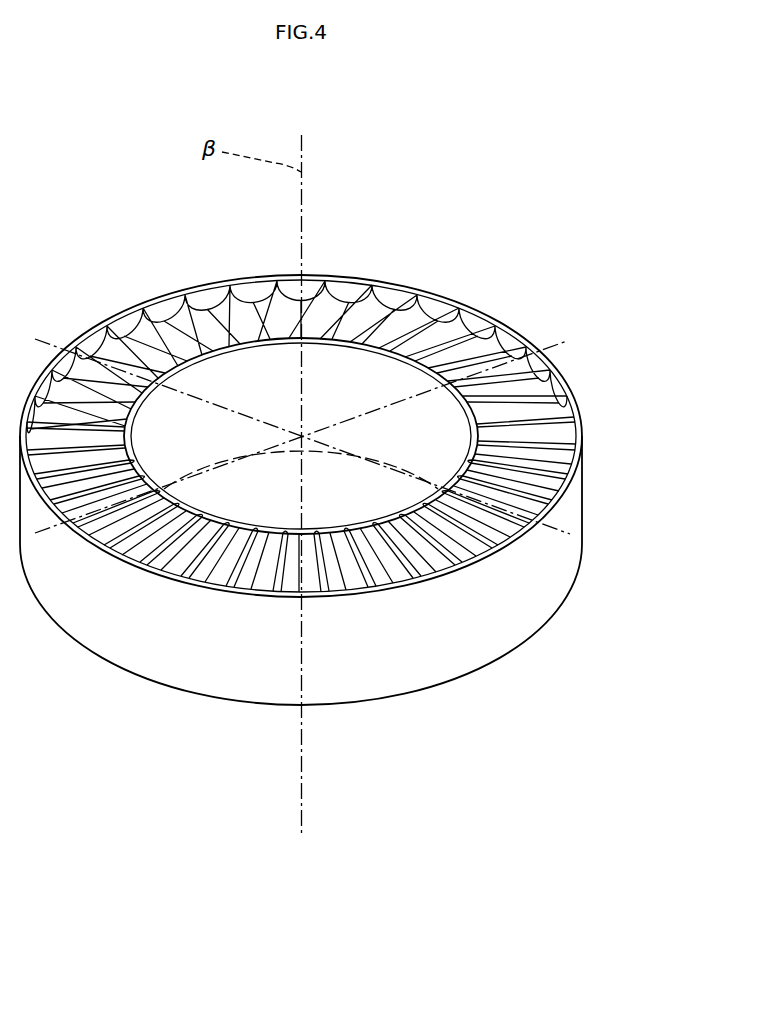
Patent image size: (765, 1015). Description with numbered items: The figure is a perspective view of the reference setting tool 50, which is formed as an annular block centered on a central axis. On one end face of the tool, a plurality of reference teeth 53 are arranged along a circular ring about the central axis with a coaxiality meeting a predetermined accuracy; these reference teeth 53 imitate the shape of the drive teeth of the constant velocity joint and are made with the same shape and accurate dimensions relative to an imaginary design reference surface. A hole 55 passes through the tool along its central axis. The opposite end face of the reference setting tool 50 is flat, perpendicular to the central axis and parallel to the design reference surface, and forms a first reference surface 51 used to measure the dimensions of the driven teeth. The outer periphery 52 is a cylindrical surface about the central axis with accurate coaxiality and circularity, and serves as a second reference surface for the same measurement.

The reference setting tool 50 is at (571, 328).
The first reference surface 51 is at (208, 655).
The outer periphery 52 is at (425, 653).
The reference teeth 53 is at (520, 335).
The hole 55 is at (336, 352).